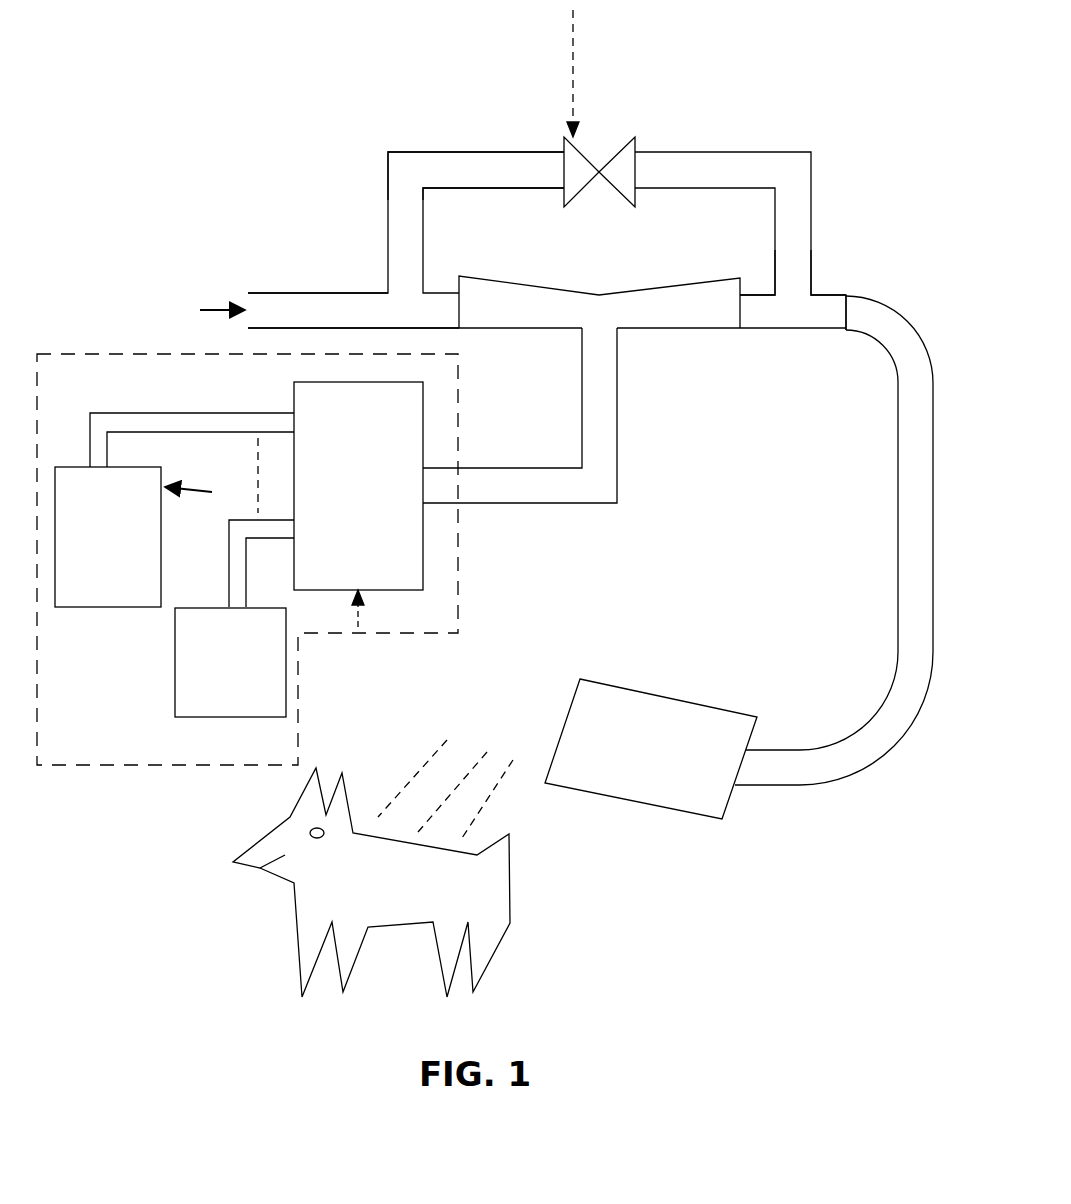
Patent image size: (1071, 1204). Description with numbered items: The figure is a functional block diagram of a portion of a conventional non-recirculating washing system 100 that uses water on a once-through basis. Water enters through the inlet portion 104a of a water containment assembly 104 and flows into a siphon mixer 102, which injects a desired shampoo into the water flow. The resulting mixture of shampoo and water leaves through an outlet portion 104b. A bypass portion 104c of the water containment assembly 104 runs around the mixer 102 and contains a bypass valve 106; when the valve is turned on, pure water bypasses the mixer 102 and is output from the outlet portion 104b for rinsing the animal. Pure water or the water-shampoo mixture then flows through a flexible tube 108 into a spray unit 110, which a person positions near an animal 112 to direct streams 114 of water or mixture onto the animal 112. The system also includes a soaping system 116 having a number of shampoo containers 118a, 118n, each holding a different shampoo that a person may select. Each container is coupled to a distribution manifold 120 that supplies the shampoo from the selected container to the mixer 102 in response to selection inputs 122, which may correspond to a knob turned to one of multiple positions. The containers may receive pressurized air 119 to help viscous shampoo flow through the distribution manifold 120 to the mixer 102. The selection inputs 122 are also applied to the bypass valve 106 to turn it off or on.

The non-recirculating washing system 100 is at (198, 66).
The siphon mixer 102 is at (664, 285).
The water containment assembly 104 is at (358, 155).
The inlet portion 104a is at (330, 290).
The outlet portion 104b is at (750, 293).
The bypass portion 104c is at (488, 150).
The bypass valve 106 is at (622, 147).
The flexible tube 108 is at (896, 463).
The spray unit 110 is at (600, 680).
The animal 112 is at (302, 803).
The streams 114 is at (430, 815).
The soaping system 116 is at (458, 553).
The shampoo container 118a is at (108, 610).
The shampoo container 118n is at (175, 705).
The pressurized air 119 is at (197, 490).
The distribution manifold 120 is at (292, 400).
The selection inputs 122 is at (576, 30).